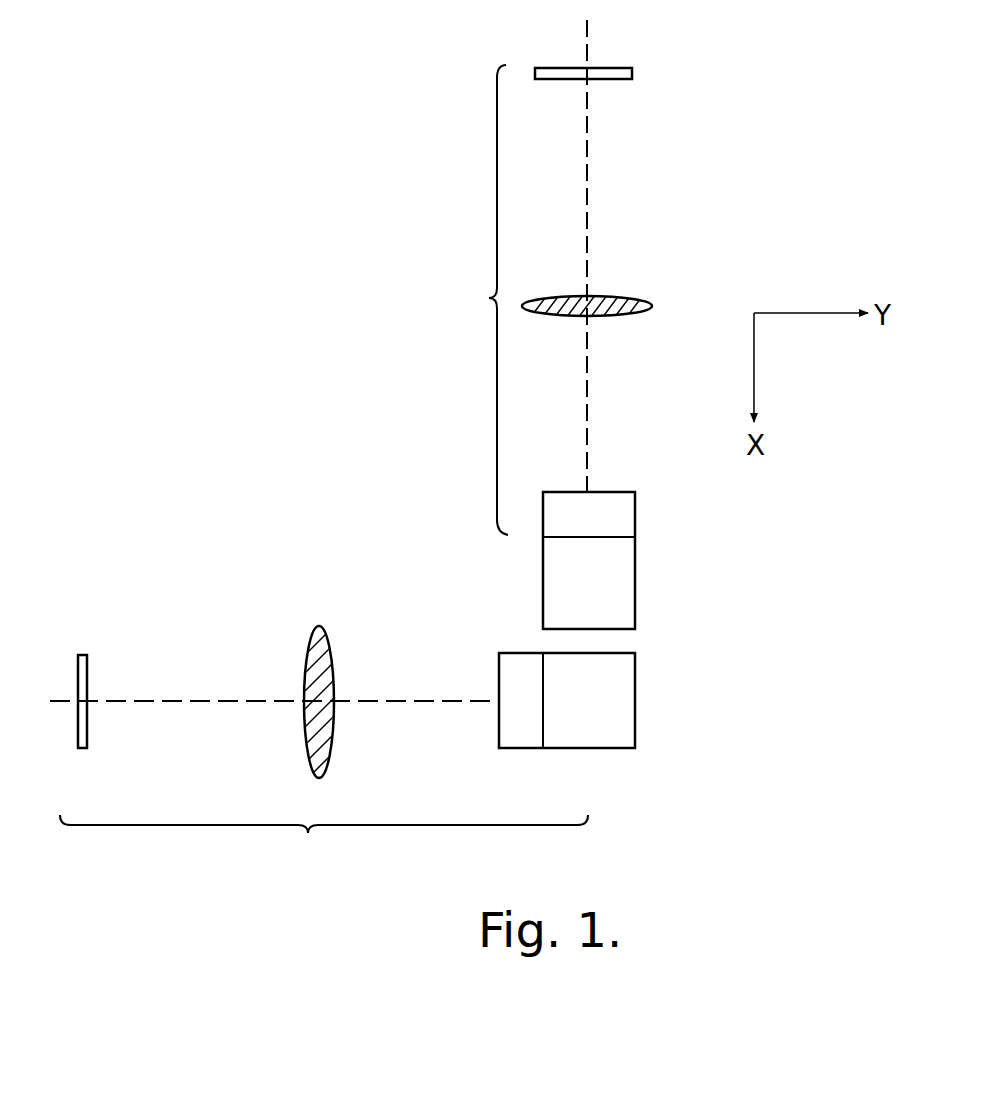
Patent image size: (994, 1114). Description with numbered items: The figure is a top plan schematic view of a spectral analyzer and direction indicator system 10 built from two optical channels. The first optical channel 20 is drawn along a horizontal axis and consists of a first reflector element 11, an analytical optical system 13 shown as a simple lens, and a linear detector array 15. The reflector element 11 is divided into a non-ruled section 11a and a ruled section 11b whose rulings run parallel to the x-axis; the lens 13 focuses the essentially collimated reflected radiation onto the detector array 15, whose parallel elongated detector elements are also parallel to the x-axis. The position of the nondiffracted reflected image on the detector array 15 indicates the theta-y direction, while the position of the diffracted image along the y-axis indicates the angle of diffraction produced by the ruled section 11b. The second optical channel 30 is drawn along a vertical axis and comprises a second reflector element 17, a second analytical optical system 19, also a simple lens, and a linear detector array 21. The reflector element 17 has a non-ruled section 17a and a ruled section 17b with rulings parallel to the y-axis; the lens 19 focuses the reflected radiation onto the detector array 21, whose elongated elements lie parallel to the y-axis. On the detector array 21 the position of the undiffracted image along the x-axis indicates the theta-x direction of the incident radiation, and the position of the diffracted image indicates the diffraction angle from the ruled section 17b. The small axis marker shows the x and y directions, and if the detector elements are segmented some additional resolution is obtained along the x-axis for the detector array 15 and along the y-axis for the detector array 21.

The spectral analyzer and direction indicator system 10 is at (727, 870).
The first reflector element 11 is at (575, 732).
The non-ruled section 11a is at (512, 720).
The ruled section 11b is at (628, 722).
The analytical optical system 13 is at (327, 757).
The linear detector array 15 is at (88, 742).
The second reflector element 17 is at (625, 547).
The non-ruled section 17a is at (626, 515).
The ruled section 17b is at (620, 592).
The second analytical optical system 19 is at (634, 296).
The optical channel 20 is at (324, 842).
The linear detector array 21 is at (612, 68).
The optical channel 30 is at (483, 300).